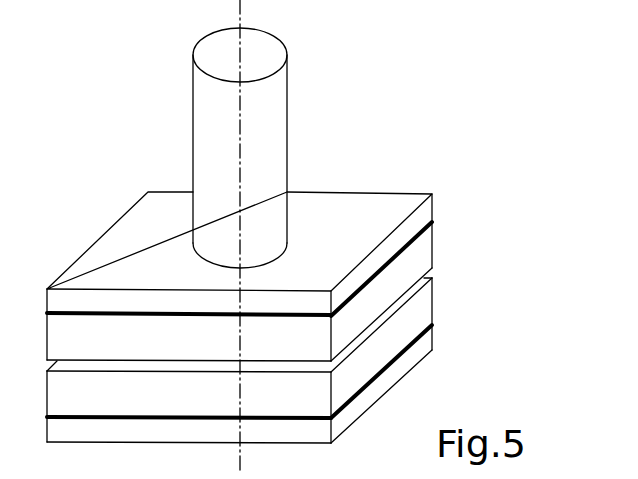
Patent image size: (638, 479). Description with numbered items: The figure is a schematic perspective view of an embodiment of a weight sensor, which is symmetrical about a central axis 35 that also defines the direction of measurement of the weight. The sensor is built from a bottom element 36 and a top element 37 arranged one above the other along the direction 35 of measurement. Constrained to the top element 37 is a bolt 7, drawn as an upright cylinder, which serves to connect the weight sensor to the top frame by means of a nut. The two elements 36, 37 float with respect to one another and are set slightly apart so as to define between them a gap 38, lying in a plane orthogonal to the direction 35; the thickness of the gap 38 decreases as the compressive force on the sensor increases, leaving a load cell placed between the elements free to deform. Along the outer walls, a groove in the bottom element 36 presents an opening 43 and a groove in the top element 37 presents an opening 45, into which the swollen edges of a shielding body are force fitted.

The central axis 35 is at (243, 15).
The bolt 7 is at (273, 145).
The top element 37 is at (425, 213).
The opening 43 is at (435, 225).
The gap 38 is at (437, 276).
The bottom element 36 is at (398, 367).
The opening 45 is at (433, 324).